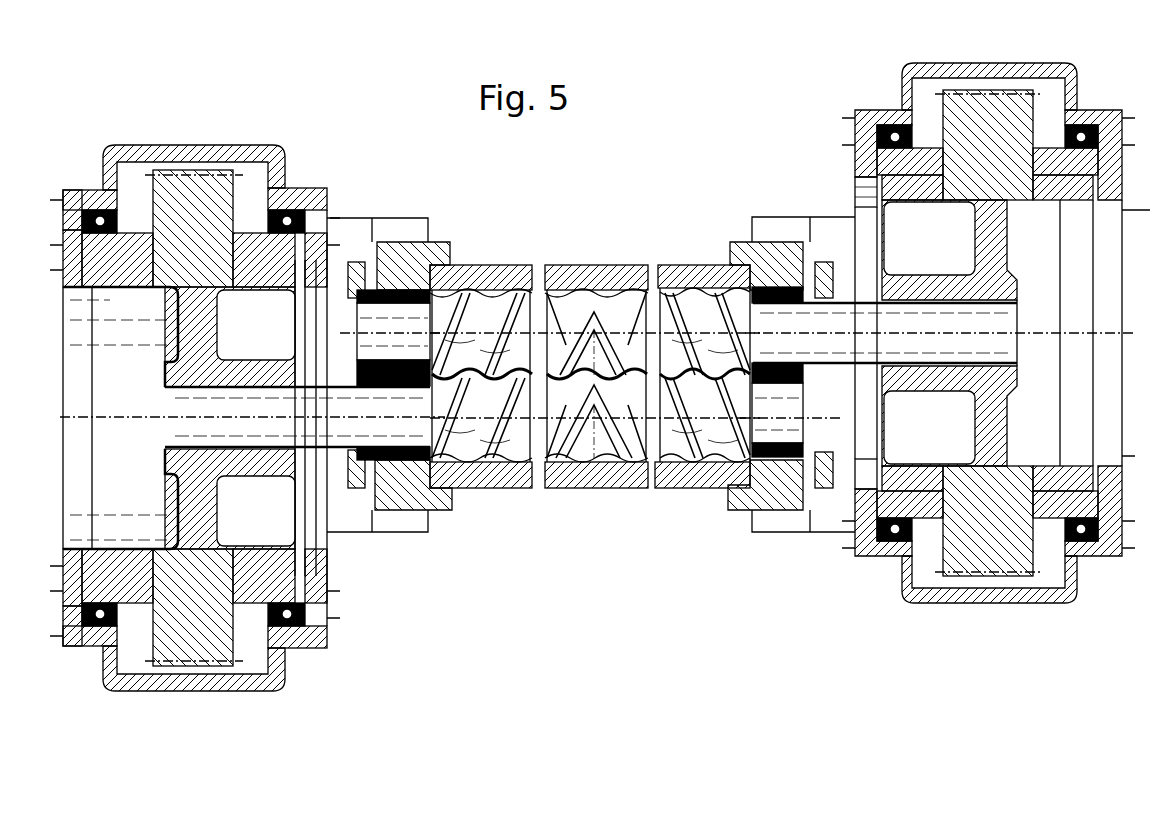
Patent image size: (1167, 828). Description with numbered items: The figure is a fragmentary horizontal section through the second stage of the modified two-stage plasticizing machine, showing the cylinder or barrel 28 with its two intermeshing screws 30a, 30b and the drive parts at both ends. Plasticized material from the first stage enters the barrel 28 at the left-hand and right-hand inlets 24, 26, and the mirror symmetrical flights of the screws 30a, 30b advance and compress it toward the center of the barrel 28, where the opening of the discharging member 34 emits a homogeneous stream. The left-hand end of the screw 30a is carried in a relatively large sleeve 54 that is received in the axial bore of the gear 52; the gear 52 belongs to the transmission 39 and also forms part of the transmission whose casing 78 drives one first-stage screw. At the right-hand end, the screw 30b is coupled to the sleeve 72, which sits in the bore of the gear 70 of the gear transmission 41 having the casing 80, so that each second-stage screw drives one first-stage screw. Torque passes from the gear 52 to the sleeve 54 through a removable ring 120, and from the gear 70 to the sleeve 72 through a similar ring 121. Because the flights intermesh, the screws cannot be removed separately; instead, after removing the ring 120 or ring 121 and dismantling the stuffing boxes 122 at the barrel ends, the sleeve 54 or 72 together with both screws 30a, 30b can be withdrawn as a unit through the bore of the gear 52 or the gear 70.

The ring 120 is at (70, 240).
The sleeve 54 is at (100, 290).
The gear 52 is at (181, 185).
The casing 78 is at (232, 150).
The gear transmission 39 is at (292, 158).
The stuffing boxes 122 is at (400, 280).
The inlet 24 is at (470, 380).
The cylinder or barrel 28 is at (581, 262).
The screw 30b is at (702, 310).
The inlet 26 is at (684, 300).
The discharging member 34 is at (578, 462).
The screw 30a is at (700, 440).
The gear transmission 41 is at (836, 94).
The gear 70 is at (978, 95).
The casing 80 is at (1038, 70).
The sleeve 72 is at (855, 207).
The ring 121 is at (1118, 512).